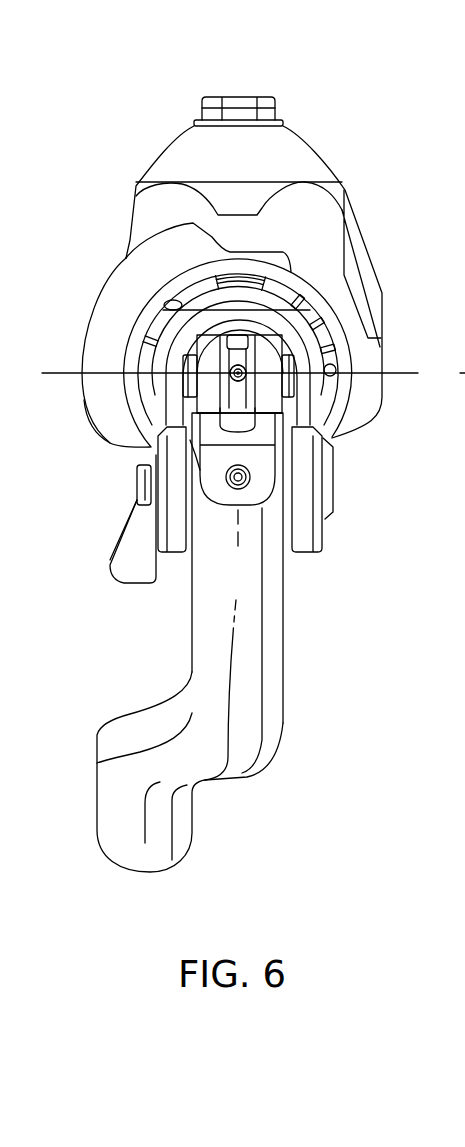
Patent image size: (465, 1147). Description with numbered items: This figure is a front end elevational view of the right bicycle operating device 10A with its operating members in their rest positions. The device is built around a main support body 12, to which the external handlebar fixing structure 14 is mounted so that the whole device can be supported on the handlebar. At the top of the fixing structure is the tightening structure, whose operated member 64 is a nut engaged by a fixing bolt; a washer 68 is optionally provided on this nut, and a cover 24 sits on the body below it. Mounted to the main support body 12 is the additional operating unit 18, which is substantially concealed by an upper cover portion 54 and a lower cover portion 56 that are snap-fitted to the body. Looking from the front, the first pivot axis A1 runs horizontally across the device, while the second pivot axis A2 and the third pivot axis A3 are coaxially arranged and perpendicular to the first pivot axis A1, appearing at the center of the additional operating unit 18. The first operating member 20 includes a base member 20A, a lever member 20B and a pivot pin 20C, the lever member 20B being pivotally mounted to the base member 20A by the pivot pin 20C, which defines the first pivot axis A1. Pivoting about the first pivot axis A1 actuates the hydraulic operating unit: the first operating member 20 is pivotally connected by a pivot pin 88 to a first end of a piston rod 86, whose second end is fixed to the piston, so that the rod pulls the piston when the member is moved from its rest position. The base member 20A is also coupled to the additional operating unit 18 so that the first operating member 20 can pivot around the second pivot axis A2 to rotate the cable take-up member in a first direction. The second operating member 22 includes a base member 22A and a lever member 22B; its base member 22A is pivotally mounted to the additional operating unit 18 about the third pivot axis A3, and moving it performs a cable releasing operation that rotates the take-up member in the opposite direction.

The bicycle operating device 10A is at (142, 88).
The main support body 12 is at (316, 148).
The external handlebar fixing structure 14 is at (284, 100).
The additional operating unit 18 is at (316, 302).
The first operating member 20 is at (292, 647).
The base member 20A is at (156, 533).
The lever member 20B is at (184, 817).
The pivot pin 20C is at (330, 500).
The second operating member 22 is at (116, 591).
The base member 22A is at (139, 485).
The lever member 22B is at (132, 518).
The cover 24 is at (178, 158).
The upper cover portion 54 is at (84, 413).
The lower cover portion 56 is at (95, 307).
The operated member 64 is at (241, 97).
The washer 68 is at (195, 121).
The piston rod 86 is at (234, 366).
The pivot pin 88 is at (186, 383).
The first pivot axis A1 is at (401, 369).
The second pivot axis A2 is at (243, 382).
The third pivot axis A3 is at (238, 373).